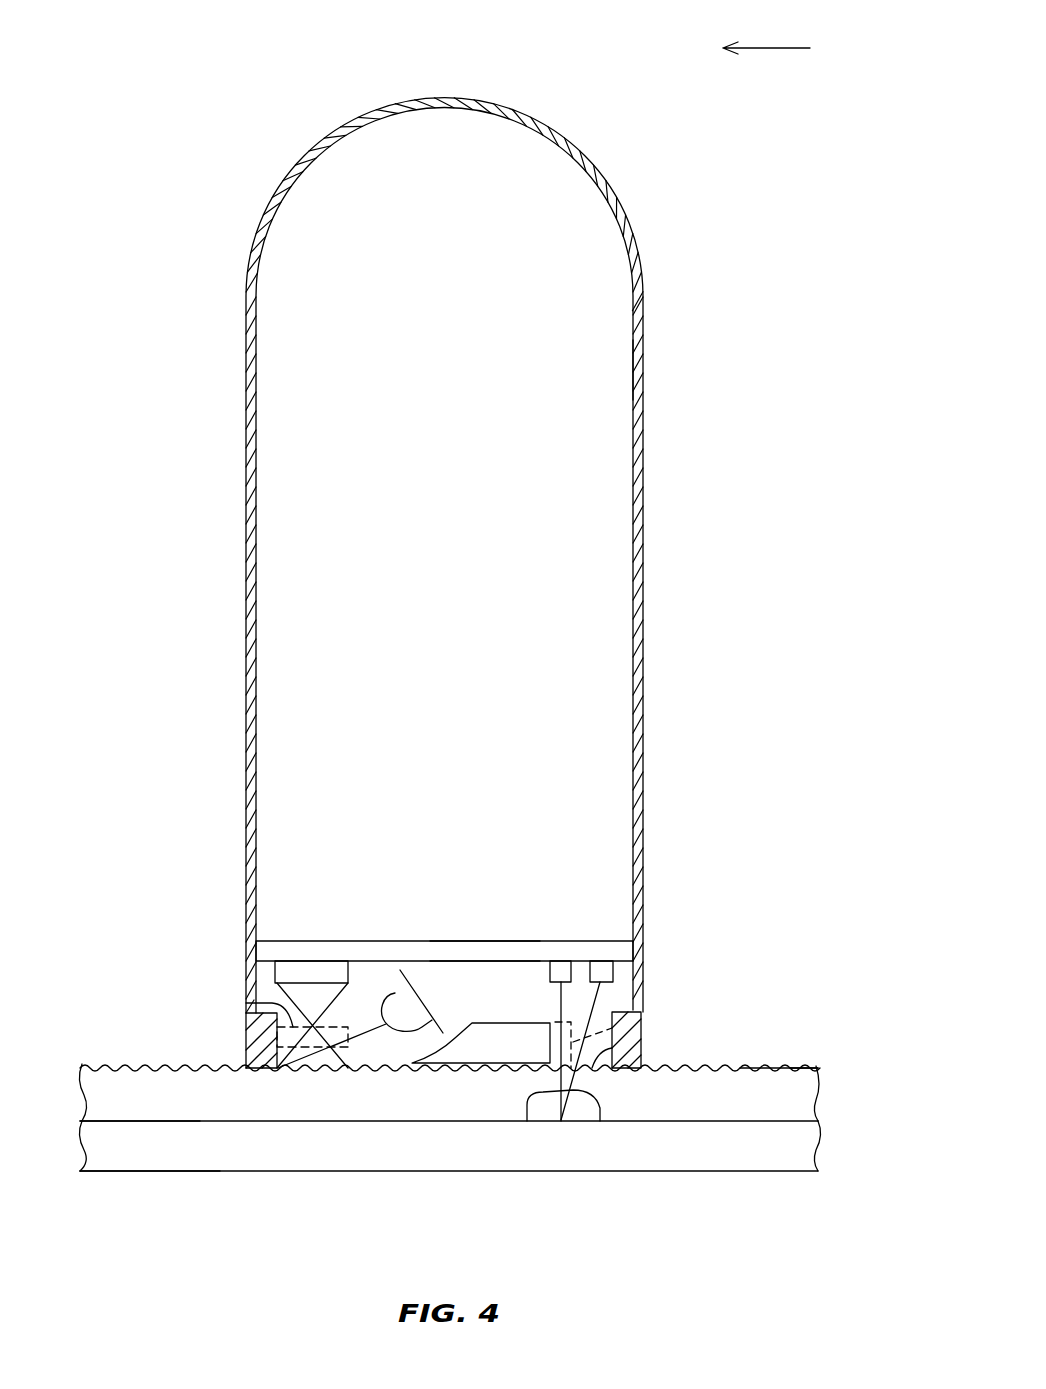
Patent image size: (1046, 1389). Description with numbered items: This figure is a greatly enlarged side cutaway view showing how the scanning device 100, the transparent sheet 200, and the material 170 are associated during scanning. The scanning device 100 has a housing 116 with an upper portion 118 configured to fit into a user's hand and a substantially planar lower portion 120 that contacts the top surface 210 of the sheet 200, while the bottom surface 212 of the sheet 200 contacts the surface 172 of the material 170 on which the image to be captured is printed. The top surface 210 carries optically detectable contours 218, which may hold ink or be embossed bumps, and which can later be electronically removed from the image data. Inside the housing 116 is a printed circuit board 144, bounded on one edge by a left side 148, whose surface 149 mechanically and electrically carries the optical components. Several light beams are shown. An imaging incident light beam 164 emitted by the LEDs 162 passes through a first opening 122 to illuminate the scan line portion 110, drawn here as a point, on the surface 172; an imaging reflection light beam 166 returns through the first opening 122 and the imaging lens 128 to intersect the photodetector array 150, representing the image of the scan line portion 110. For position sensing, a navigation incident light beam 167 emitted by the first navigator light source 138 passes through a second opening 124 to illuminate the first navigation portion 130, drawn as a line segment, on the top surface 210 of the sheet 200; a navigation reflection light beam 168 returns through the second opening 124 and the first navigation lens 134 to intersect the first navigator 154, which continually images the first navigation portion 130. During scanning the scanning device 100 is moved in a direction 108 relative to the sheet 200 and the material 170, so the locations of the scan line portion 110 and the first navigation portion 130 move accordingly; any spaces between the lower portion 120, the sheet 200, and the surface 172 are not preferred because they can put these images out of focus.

The scanning device 100 is at (222, 157).
The direction 108 is at (788, 48).
The scan line portion 110 is at (560, 1121).
The housing 116 is at (638, 249).
The upper portion 118 is at (641, 364).
The lower portion 120 is at (450, 1063).
The first opening 122 is at (641, 1049).
The second opening 124 is at (246, 1046).
The imaging lens 128 is at (642, 1020).
The first navigation portion 130 is at (348, 1083).
The first navigation lens 134 is at (348, 1027).
The first navigator light source 138 is at (393, 990).
The printed circuit board 144 is at (305, 940).
The left side 148 is at (490, 953).
The surface 149 is at (467, 961).
The photodetector array 150 is at (550, 974).
The first navigator 154 is at (275, 970).
The LEDs 162 is at (613, 972).
The imaging incident light beam 164 is at (600, 1121).
The imaging reflection light beam 166 is at (527, 1121).
The navigation incident light beam 167 is at (368, 1040).
The navigation reflection light beam 168 is at (246, 1003).
The material 170 is at (845, 1151).
The surface 172 is at (112, 1121).
The transparent sheet 200 is at (845, 1099).
The top surface 210 is at (815, 1064).
The bottom surface 212 is at (150, 1121).
The contours 218 is at (790, 1066).